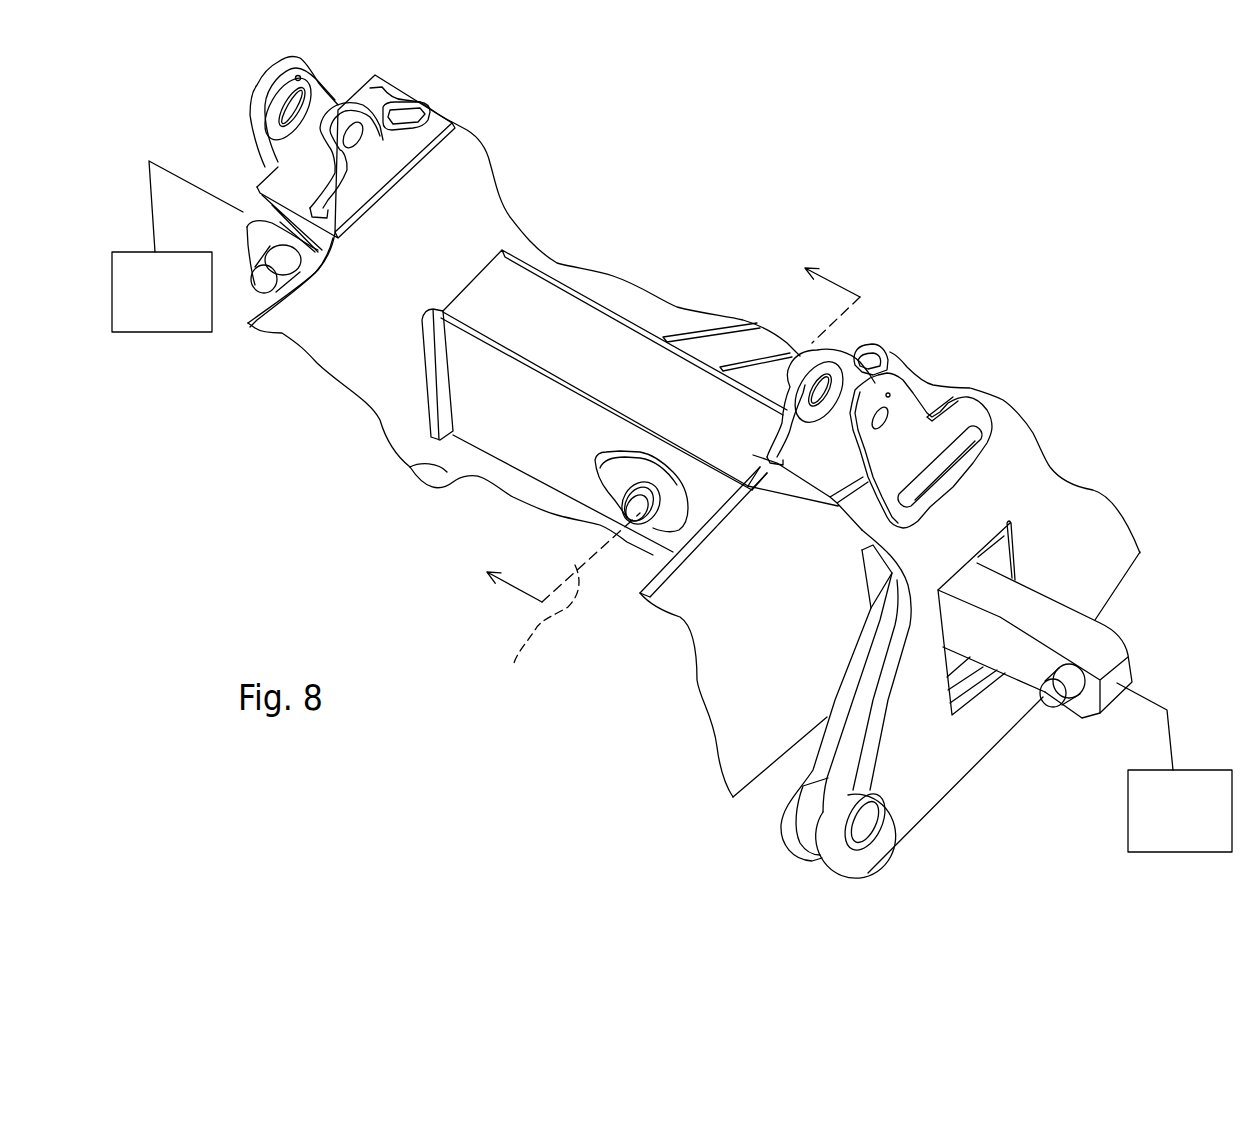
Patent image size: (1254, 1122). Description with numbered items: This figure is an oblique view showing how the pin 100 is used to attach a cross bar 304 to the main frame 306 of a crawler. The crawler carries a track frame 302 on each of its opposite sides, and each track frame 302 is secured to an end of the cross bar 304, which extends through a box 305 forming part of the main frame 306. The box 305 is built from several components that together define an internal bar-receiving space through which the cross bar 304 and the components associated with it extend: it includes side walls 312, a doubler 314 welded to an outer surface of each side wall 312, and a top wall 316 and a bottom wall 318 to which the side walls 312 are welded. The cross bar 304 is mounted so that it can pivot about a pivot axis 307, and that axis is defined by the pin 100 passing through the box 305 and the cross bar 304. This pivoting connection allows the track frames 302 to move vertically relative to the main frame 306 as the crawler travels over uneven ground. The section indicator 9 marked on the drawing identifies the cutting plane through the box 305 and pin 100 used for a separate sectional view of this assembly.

The section line 9- 9 is at (661, 420).
The pin 100 is at (638, 512).
The track frame 302 is at (140, 332).
The cross bar 304 is at (1017, 662).
The box 305 is at (526, 447).
The main frame 306 is at (729, 626).
The pivot axis 307 is at (531, 634).
The side wall 312 is at (457, 368).
The doubler 314 is at (667, 537).
The top wall 316 is at (533, 308).
The bottom wall 318 is at (410, 468).